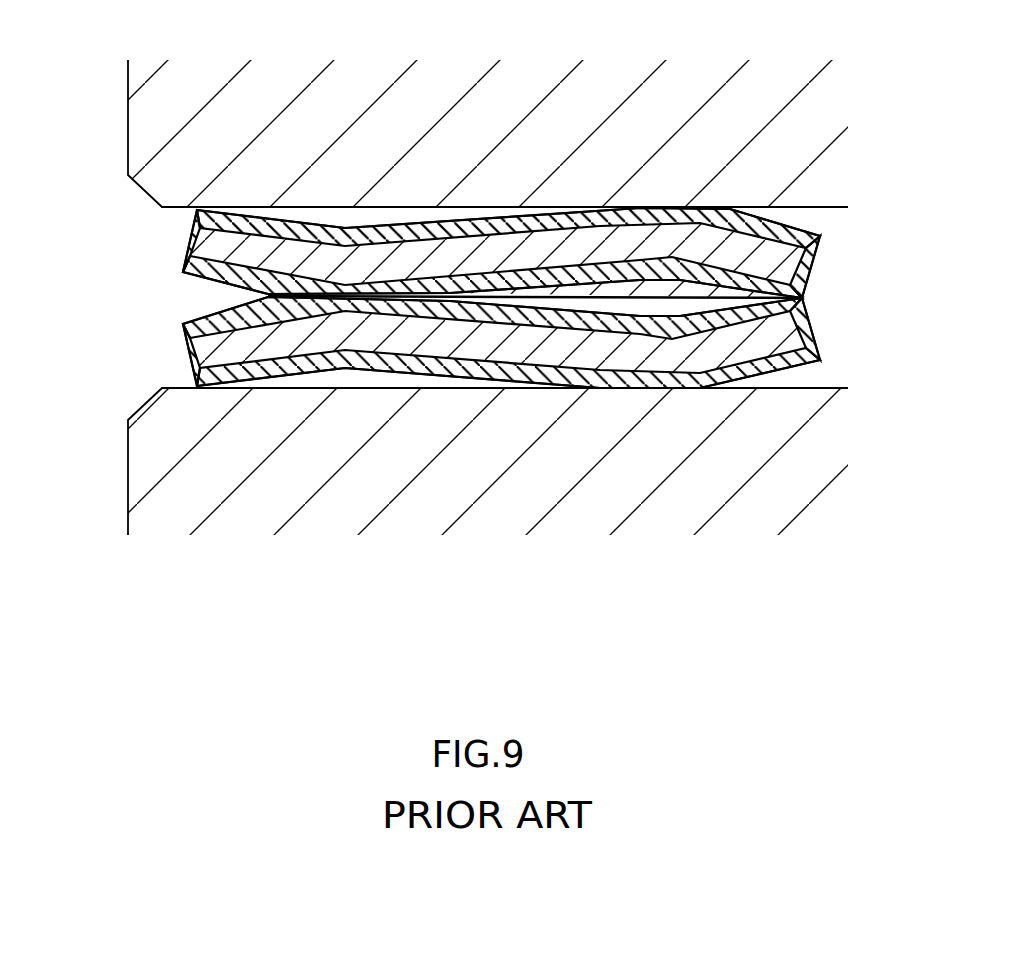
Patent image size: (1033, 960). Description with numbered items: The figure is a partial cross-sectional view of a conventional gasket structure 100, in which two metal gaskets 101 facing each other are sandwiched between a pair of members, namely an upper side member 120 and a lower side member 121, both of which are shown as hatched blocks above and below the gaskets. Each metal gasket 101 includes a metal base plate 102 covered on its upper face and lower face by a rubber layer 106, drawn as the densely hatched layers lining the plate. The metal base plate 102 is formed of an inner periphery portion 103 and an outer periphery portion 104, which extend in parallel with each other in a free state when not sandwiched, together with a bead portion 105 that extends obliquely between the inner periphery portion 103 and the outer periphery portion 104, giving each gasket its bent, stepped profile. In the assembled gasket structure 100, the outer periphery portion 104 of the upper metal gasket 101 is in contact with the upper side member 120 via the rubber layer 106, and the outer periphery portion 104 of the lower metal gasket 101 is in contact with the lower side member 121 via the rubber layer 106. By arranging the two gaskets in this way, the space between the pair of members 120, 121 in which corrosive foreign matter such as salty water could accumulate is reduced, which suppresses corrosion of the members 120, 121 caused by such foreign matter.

The gasket structure 100 is at (456, 652).
The metal gasket 101 is at (435, 201).
The metal base plate 102 is at (593, 216).
The inner periphery portion 103 is at (755, 255).
The outer periphery portion 104 is at (232, 250).
The bead portion 105 is at (440, 260).
The rubber layer 106 is at (385, 228).
The upper side member 120 is at (175, 113).
The lower side member 121 is at (170, 487).